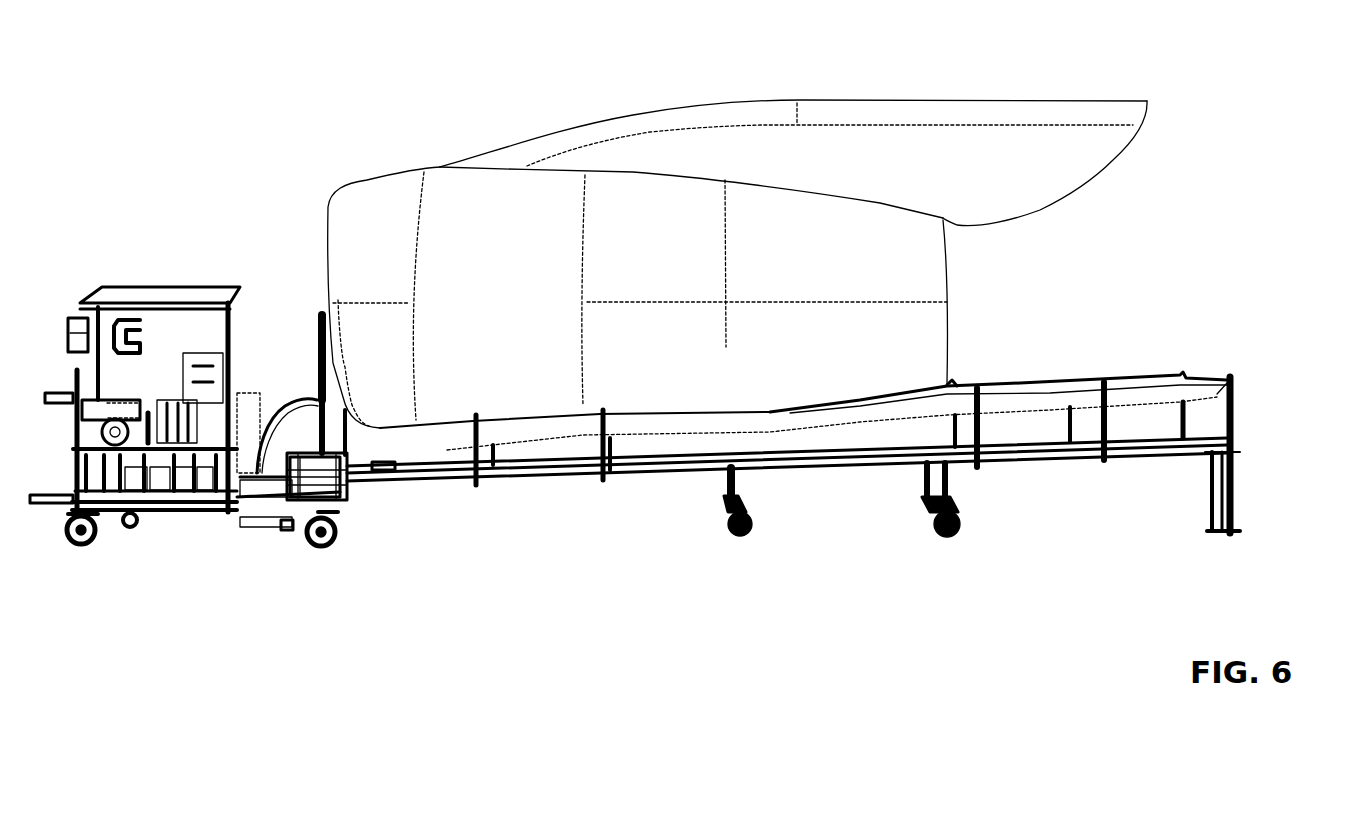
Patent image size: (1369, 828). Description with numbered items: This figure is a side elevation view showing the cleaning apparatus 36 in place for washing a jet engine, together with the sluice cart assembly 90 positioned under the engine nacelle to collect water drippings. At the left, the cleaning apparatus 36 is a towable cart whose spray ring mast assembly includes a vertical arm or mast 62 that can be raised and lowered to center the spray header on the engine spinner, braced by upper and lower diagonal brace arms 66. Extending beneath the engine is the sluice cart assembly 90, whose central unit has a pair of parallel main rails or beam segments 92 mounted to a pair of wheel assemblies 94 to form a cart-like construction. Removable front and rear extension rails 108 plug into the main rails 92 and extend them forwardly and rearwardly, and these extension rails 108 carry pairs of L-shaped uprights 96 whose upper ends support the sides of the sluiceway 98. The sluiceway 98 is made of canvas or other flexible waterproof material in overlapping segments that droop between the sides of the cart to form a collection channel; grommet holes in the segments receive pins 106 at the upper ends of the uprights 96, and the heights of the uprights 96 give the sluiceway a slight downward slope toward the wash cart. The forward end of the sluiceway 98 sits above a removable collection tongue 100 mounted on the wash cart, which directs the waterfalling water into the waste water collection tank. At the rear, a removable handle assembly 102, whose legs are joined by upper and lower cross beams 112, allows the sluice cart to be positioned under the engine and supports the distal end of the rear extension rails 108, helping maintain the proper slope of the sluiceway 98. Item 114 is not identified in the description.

The cleaning apparatus 36 is at (146, 279).
The vertical arm or mast 62 is at (318, 342).
The diagonal brace arms 66 is at (322, 316).
The sluice cart assembly 90 is at (842, 508).
The main rails or beam segments 92 is at (803, 468).
The wheel assemblies 94 is at (950, 487).
The L-shaped uprights 96 is at (1110, 417).
The sluiceway 98 is at (955, 402).
The collection tongue 100 is at (380, 480).
The handle assembly 102 is at (1251, 460).
The pins 106 is at (1067, 380).
The extension rails 108 is at (553, 478).
The cross beams 112 is at (1208, 482).
The foot 114 is at (1240, 513).